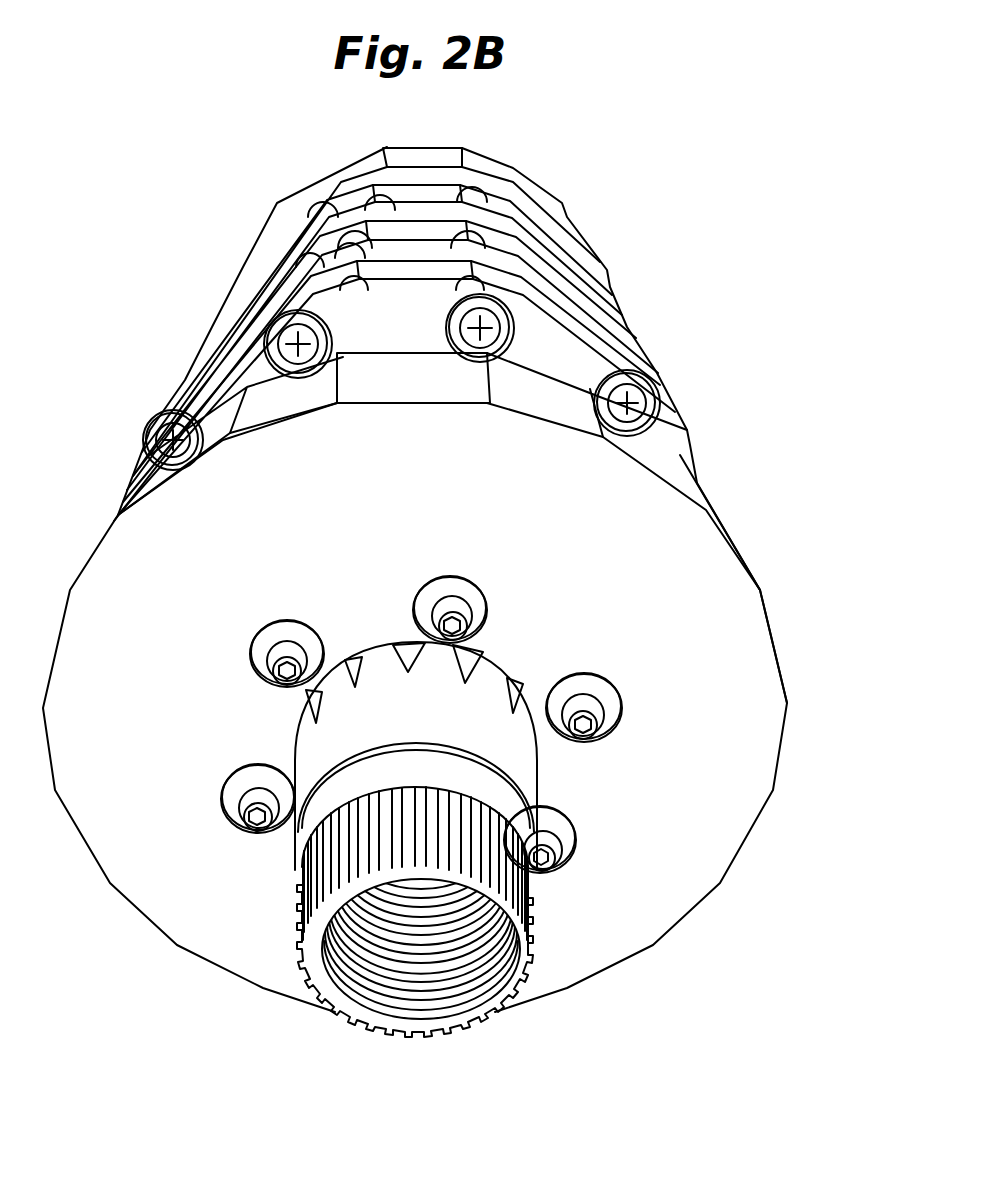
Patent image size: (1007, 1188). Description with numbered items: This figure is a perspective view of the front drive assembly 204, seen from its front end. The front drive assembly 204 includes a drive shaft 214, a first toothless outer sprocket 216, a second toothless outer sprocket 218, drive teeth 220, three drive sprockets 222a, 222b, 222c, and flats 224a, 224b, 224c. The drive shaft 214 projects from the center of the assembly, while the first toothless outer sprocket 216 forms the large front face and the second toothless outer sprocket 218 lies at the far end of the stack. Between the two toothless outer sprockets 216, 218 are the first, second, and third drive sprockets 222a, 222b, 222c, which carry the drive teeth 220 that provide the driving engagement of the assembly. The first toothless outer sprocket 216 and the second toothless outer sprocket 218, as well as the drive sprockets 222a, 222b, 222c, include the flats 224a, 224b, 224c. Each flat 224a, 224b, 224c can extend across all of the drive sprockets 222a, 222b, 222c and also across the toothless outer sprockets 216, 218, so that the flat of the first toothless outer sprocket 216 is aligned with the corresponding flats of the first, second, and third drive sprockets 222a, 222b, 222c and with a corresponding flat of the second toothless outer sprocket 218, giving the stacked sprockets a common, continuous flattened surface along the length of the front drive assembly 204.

The front drive assembly 204 is at (742, 217).
The drive shaft 214 is at (503, 982).
The first toothless outer sprocket 216 is at (197, 918).
The second toothless outer sprocket 218 is at (411, 157).
The drive teeth 220 is at (623, 338).
The first drive sprocket 222a is at (198, 347).
The second drive sprocket 222b is at (267, 275).
The third drive sprocket 222c is at (331, 212).
The flat 224a is at (682, 478).
The flat 224b is at (737, 552).
The flat 224c is at (758, 635).